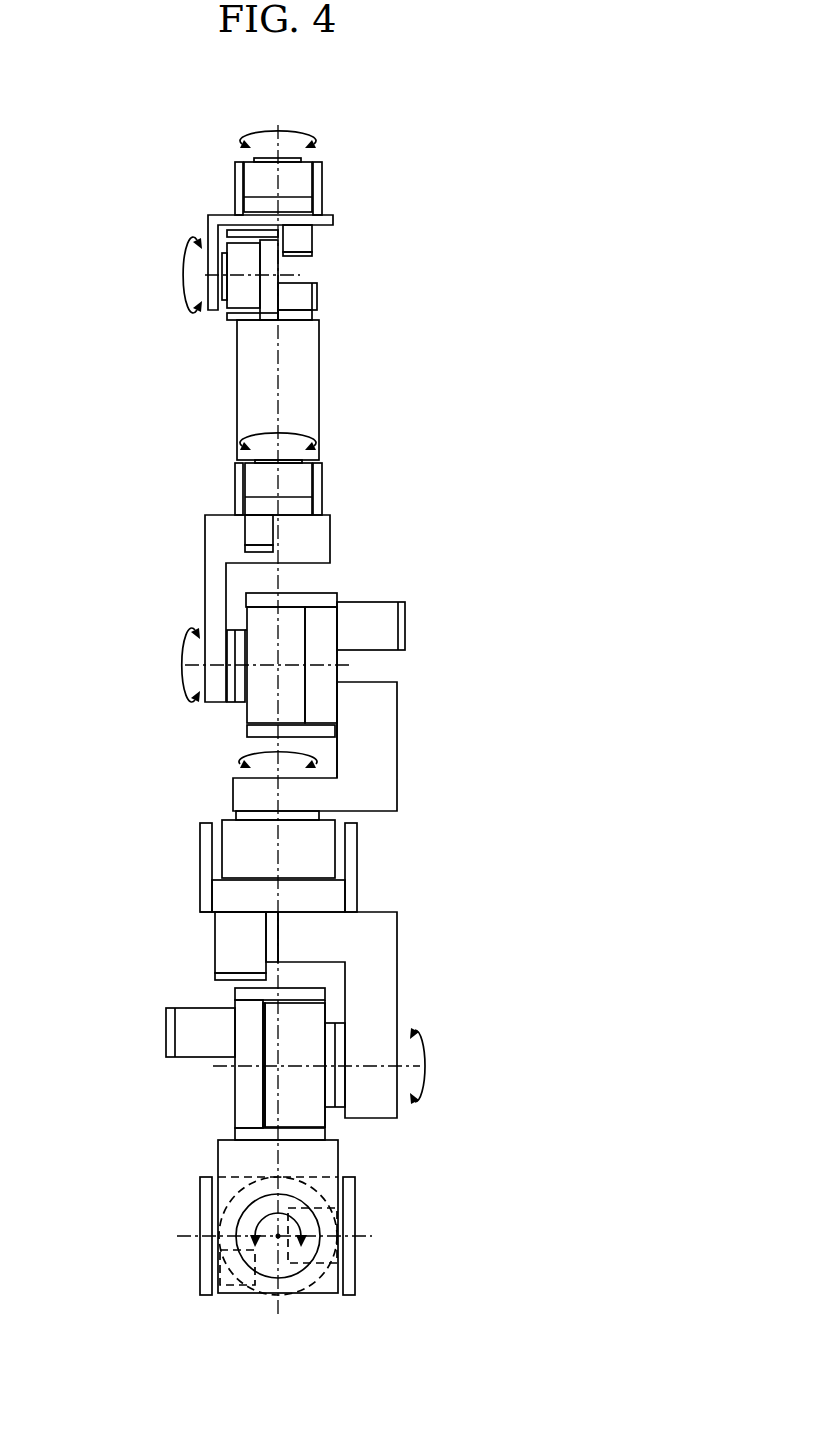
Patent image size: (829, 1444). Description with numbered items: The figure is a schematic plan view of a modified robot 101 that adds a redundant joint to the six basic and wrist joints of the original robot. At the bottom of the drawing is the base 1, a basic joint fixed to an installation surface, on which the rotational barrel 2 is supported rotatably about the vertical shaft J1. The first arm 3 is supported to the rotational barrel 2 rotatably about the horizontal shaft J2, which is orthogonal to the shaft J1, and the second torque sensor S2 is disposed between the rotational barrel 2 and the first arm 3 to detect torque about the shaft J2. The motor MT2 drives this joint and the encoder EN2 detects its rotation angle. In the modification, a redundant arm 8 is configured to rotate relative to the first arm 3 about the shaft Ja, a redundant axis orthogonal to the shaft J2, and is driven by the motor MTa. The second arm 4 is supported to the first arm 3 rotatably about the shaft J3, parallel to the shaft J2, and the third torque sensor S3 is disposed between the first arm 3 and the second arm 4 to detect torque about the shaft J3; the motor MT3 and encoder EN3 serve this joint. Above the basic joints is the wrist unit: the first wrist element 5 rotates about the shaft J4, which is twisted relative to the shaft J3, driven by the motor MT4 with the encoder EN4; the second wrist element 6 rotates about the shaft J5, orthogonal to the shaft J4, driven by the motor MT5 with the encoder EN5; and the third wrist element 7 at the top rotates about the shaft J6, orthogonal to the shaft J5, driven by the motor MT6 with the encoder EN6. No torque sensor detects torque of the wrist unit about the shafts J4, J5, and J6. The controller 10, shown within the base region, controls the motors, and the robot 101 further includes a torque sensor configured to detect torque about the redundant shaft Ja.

The robot 101 is at (404, 152).
The base 1 is at (200, 1206).
The rotational barrel 2 is at (218, 1153).
The first arm 3 is at (397, 950).
The second arm 4 is at (205, 600).
The first wrist element 5 is at (237, 380).
The second wrist element 6 is at (225, 215).
The third wrist element 7 is at (238, 160).
The redundant arm 8 is at (397, 768).
The controller 10 is at (228, 1290).
The shaft J1 is at (278, 1240).
The shaft J2 is at (337, 1064).
The shaft J3 is at (248, 685).
The shaft J4 is at (278, 460).
The shaft J5 is at (222, 275).
The shaft J6 is at (278, 125).
The shaft Ja is at (278, 831).
The motor MT2 is at (192, 1057).
The motor MT3 is at (383, 651).
The motor MT4 is at (245, 530).
The motor MT5 is at (295, 316).
The motor MT6 is at (314, 238).
The motor MTa is at (215, 945).
The encoder EN2 is at (166, 1031).
The encoder EN3 is at (407, 625).
The encoder EN4 is at (245, 552).
The encoder EN5 is at (318, 295).
The encoder EN6 is at (297, 257).
The second torque sensor S2 is at (340, 1023).
The third torque sensor S3 is at (233, 702).